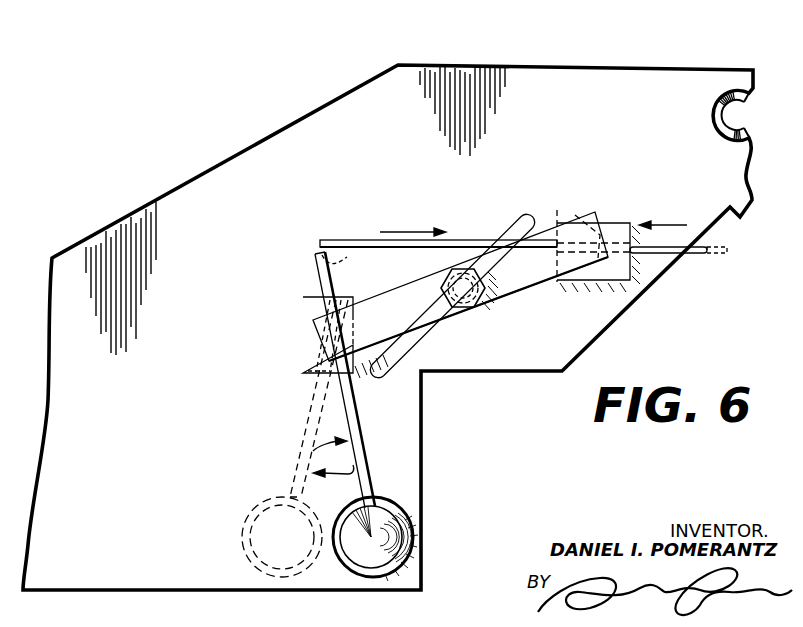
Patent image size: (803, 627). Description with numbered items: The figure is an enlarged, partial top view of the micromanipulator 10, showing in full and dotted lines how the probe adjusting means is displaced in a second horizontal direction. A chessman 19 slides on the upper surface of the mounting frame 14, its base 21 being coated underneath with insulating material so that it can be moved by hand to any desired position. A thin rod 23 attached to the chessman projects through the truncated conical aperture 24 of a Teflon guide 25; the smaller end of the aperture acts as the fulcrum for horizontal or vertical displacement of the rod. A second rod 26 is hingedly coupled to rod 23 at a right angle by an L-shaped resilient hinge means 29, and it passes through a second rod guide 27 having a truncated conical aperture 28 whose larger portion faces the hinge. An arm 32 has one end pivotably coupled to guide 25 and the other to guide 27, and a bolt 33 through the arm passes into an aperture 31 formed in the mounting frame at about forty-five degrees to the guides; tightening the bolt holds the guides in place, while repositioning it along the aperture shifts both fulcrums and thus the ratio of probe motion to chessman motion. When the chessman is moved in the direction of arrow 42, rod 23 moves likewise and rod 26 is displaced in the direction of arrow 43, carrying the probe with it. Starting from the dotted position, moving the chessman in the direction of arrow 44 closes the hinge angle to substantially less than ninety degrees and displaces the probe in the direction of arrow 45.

The apparatus 10 is at (130, 130).
The frame member 14 is at (385, 126).
The chessman 19 is at (262, 543).
The base 21 is at (381, 500).
The rod 23 is at (352, 422).
The truncated conical aperture 24 is at (310, 372).
The guide 25 is at (310, 308).
The second rod 26 is at (341, 241).
The second rod guide 27 is at (612, 236).
The truncated conical aperture 28 is at (576, 237).
The hinge means 29 is at (348, 256).
The aperture 31 is at (518, 226).
The arm 32 is at (401, 329).
The bolt 33 is at (460, 305).
The arrow 42 is at (322, 401).
The arrow 43 is at (413, 220).
The arrow 44 is at (330, 452).
The arrow 45 is at (684, 225).